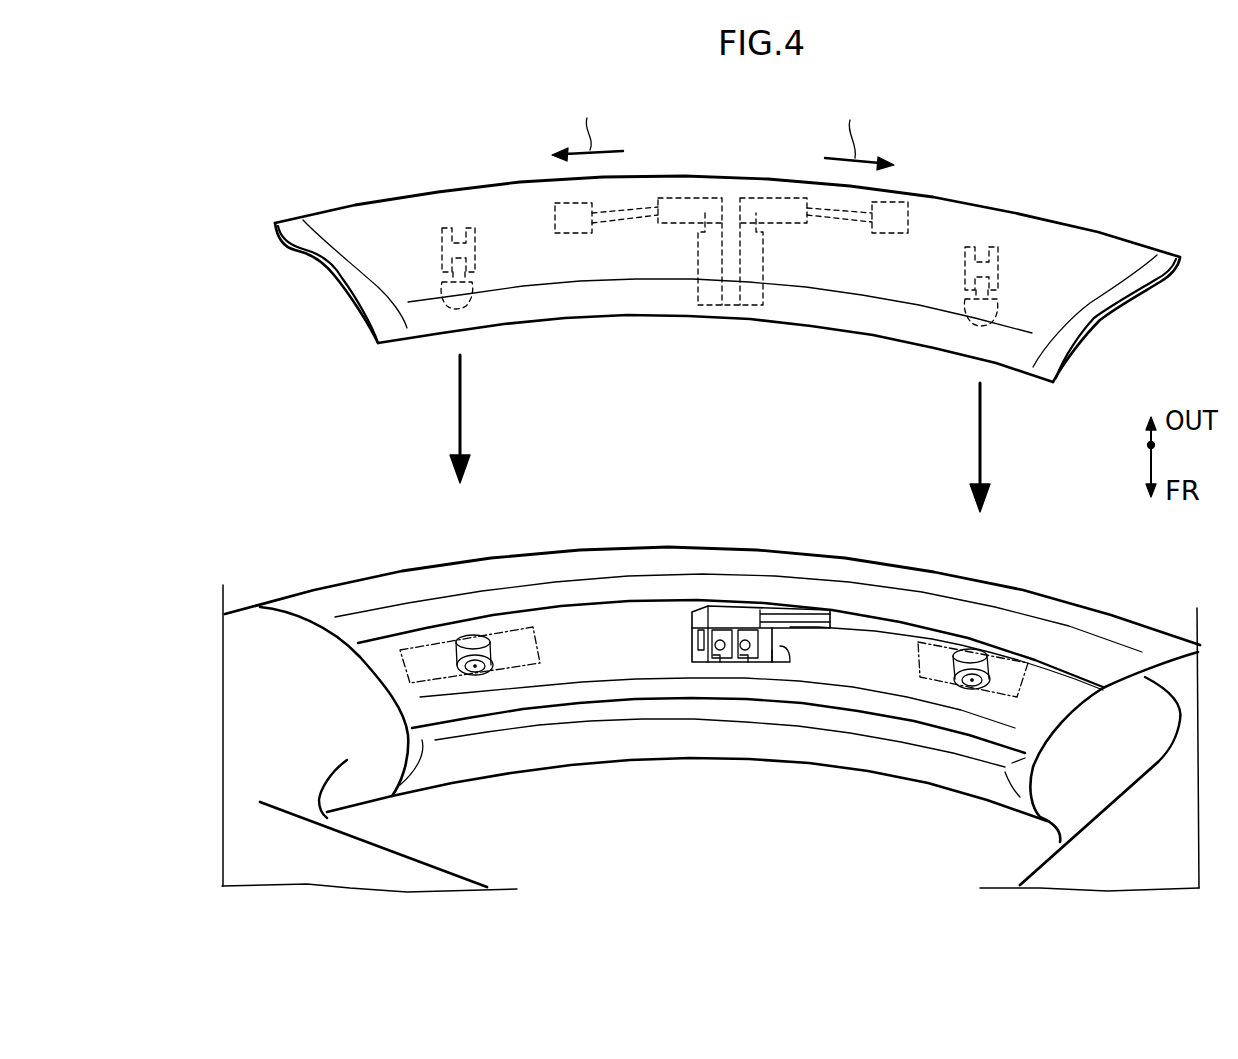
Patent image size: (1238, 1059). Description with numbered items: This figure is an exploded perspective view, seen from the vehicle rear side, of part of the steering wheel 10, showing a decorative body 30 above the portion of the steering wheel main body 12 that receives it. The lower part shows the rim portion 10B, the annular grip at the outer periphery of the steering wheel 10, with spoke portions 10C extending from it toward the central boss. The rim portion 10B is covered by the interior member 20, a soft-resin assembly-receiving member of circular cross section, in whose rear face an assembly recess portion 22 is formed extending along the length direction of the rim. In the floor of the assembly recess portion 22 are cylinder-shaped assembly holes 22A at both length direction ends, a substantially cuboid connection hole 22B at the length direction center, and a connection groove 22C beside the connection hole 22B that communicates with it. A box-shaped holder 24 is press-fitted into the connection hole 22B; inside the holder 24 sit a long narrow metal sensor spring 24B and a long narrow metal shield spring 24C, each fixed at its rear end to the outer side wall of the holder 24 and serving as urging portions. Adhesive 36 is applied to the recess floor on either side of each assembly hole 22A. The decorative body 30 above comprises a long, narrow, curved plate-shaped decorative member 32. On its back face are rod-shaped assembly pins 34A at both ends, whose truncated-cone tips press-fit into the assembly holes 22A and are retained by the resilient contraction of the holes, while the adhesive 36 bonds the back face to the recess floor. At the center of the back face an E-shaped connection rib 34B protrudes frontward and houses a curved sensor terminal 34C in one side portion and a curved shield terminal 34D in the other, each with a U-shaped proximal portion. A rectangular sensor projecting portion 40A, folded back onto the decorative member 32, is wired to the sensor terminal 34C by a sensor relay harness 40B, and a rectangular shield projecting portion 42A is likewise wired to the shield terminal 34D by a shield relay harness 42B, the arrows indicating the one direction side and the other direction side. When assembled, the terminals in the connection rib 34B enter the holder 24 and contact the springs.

The steering wheel 10 is at (258, 400).
The rim portion 10B is at (305, 590).
The spoke portions 10C is at (437, 858).
The steering wheel main body 12 is at (413, 545).
The interior member 20 is at (588, 617).
The assembly recess portion 22 is at (650, 617).
The assembly holes 22A is at (475, 667).
The connection hole 22B is at (777, 660).
The connection groove 22C is at (848, 620).
The holder 24 is at (725, 612).
The sensor spring 24B is at (717, 663).
The shield spring 24C is at (745, 665).
The decorative body 30 is at (426, 172).
The decorative member 32 is at (965, 198).
The assembly pins 34A is at (442, 293).
The connection rib 34B is at (733, 306).
The sensor terminal 34C is at (693, 198).
The shield terminal 34D is at (762, 198).
The adhesive 36 is at (538, 643).
The sensor projecting portion 40A is at (568, 203).
The sensor relay harness 40B is at (627, 207).
The shield projecting portion 42A is at (896, 202).
The shield relay harness 42B is at (835, 207).